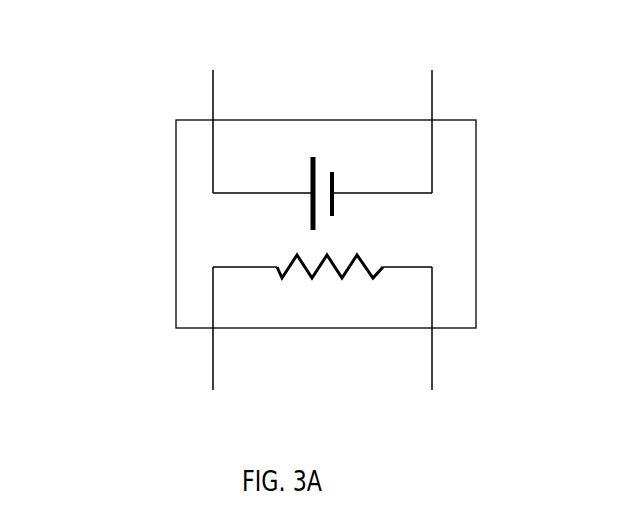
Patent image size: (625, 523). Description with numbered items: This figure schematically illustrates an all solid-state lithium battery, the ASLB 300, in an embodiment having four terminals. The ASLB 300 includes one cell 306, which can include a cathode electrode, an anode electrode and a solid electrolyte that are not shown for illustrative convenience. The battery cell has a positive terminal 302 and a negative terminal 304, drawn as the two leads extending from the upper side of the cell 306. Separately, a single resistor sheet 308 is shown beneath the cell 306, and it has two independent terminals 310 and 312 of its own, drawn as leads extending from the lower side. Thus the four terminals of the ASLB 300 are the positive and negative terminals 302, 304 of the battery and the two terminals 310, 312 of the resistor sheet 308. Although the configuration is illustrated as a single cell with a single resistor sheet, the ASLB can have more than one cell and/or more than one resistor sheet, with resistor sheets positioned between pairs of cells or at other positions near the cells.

The all solid-state lithium battery 300 is at (157, 58).
The positive terminal 302 is at (169, 131).
The negative terminal 304 is at (475, 131).
The cell 306 is at (322, 187).
The resistor sheet 308 is at (322, 255).
The resistor sheet terminal 310 is at (191, 329).
The resistor sheet terminal 312 is at (456, 329).